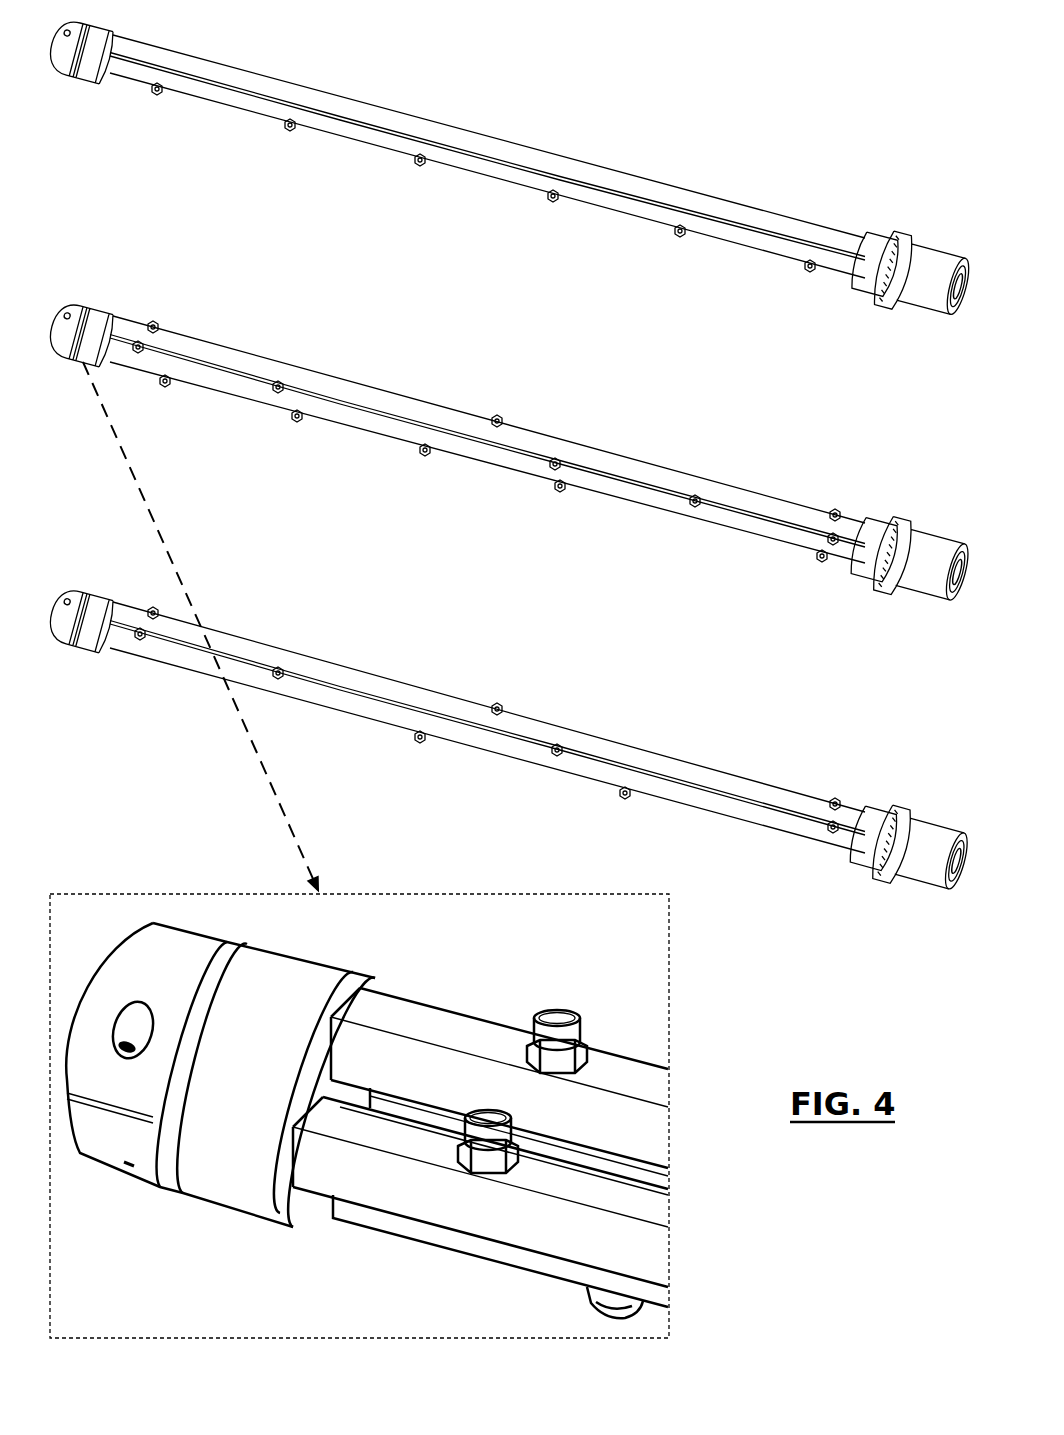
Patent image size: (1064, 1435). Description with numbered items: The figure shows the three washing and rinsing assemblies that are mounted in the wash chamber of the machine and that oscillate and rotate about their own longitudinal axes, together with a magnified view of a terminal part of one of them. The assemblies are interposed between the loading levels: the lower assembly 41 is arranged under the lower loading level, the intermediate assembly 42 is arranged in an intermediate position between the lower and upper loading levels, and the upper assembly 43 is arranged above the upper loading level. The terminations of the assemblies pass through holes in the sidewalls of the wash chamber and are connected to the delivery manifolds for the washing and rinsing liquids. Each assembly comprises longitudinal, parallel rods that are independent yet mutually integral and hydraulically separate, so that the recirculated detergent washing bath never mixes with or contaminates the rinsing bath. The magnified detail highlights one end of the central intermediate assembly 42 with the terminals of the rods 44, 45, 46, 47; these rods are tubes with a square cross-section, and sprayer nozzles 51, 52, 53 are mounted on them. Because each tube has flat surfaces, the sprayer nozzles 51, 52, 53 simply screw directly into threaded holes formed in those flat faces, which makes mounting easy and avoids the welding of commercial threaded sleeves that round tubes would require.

The lower assembly 41 is at (735, 778).
The intermediate assembly 42 is at (695, 500).
The upper assembly 43 is at (668, 214).
The rod 44 is at (435, 1027).
The rod 45 is at (415, 1187).
The rod 46 is at (548, 1272).
The rod 47 is at (608, 1163).
The sprayer nozzle 51 is at (573, 1007).
The sprayer nozzle 52 is at (470, 1173).
The sprayer nozzle 53 is at (627, 1320).